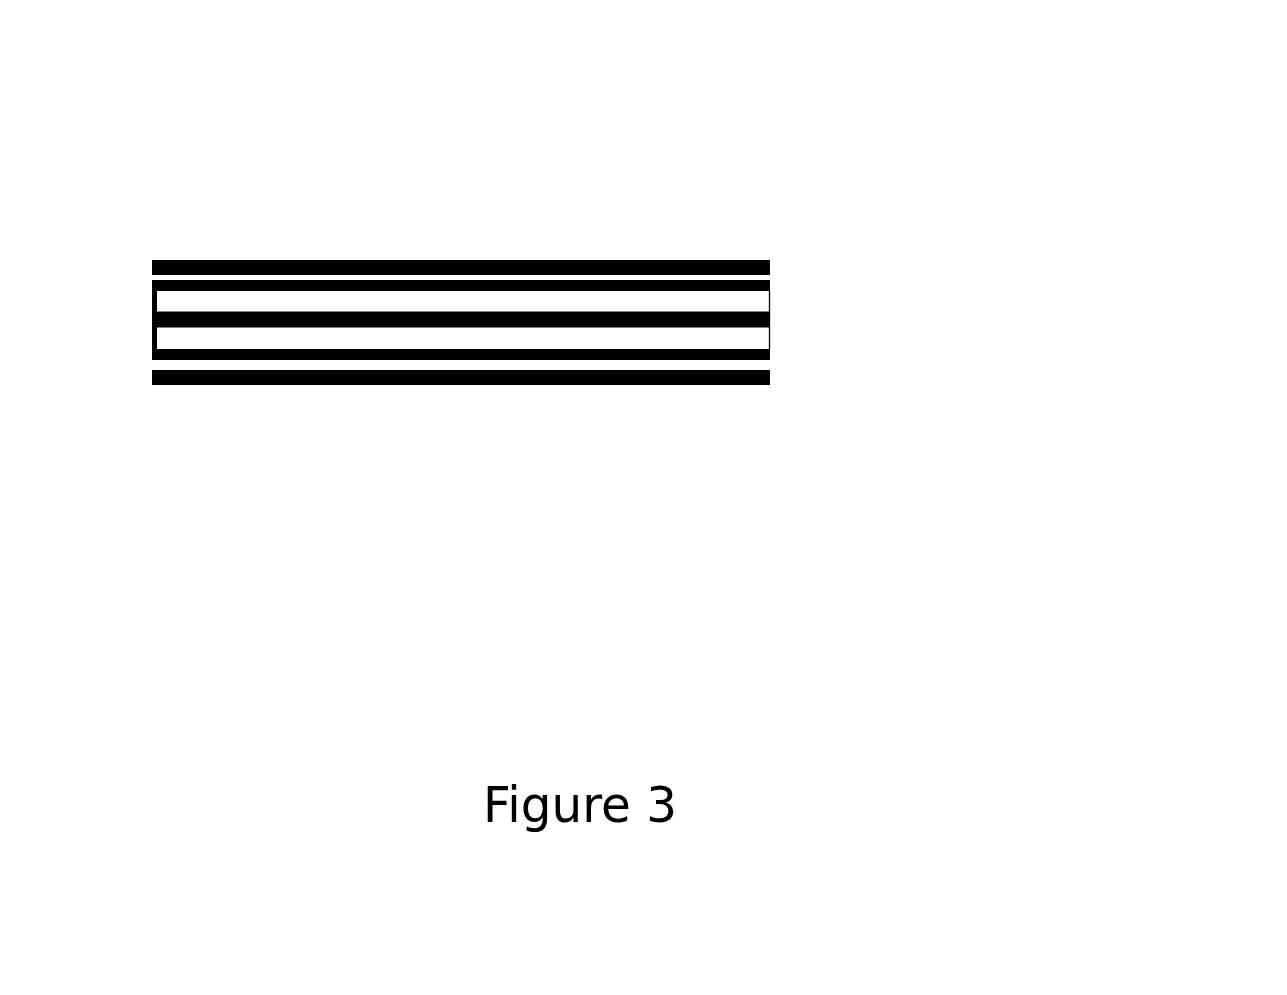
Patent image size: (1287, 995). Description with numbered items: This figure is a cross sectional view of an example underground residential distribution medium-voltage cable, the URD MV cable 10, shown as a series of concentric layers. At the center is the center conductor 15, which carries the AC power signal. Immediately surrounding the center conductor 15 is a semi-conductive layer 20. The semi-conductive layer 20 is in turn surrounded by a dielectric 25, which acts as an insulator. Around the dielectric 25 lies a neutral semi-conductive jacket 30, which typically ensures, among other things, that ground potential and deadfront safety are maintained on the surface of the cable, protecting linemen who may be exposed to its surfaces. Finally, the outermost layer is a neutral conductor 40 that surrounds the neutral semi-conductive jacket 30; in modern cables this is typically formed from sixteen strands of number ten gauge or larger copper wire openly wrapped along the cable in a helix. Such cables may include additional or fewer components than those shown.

The URD MV cable 10 is at (453, 222).
The neutral conductor 40 is at (657, 261).
The dielectric 25 is at (771, 298).
The center conductor 15 is at (771, 320).
The semi-conductive layer 20 is at (771, 328).
The neutral semi-conductive jacket 30 is at (771, 355).